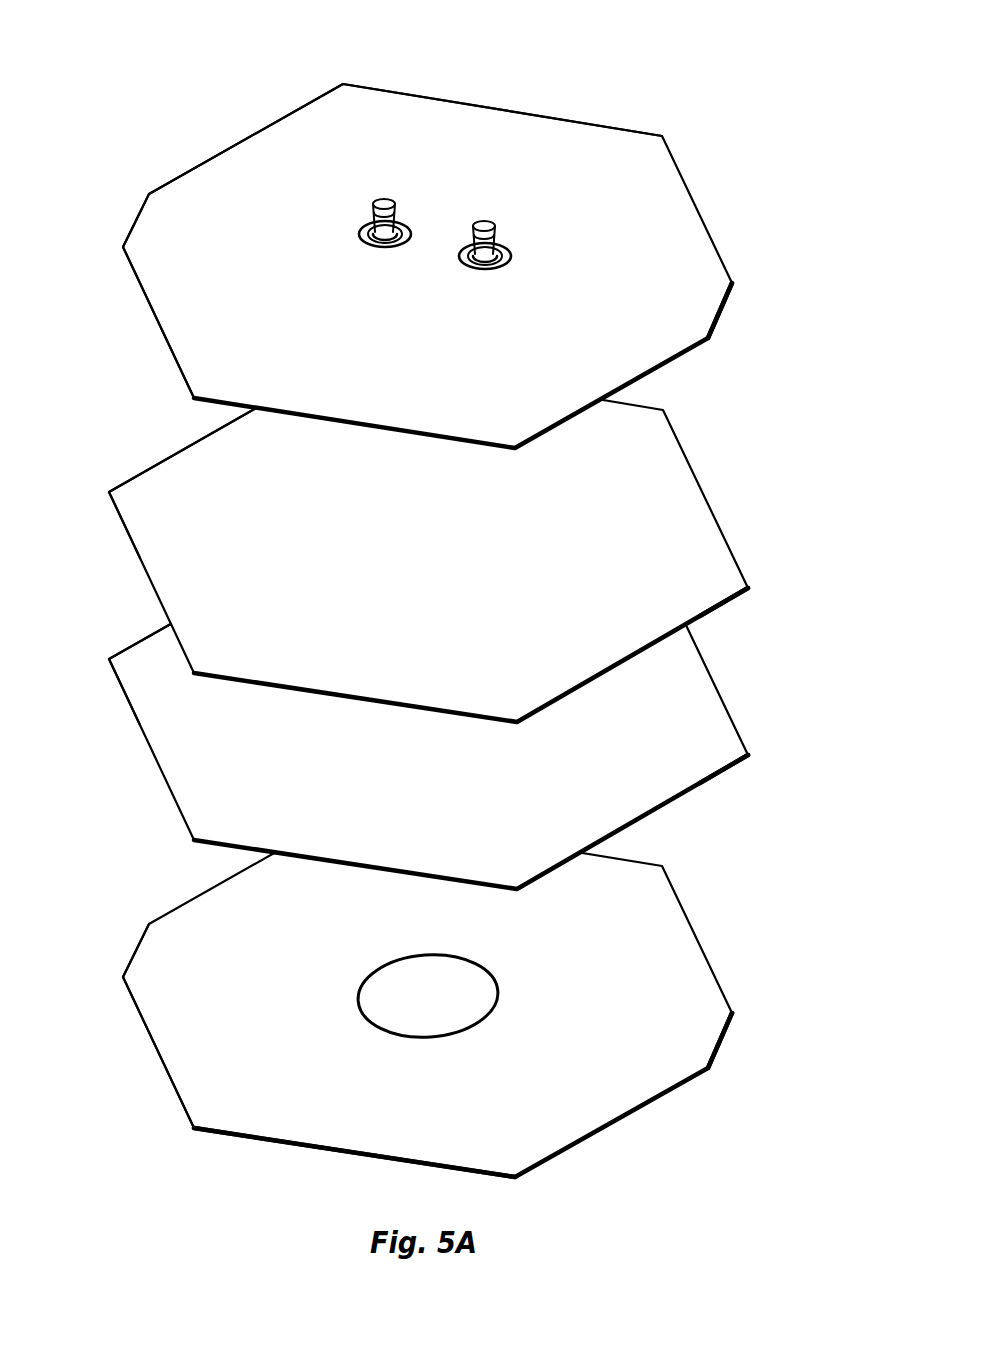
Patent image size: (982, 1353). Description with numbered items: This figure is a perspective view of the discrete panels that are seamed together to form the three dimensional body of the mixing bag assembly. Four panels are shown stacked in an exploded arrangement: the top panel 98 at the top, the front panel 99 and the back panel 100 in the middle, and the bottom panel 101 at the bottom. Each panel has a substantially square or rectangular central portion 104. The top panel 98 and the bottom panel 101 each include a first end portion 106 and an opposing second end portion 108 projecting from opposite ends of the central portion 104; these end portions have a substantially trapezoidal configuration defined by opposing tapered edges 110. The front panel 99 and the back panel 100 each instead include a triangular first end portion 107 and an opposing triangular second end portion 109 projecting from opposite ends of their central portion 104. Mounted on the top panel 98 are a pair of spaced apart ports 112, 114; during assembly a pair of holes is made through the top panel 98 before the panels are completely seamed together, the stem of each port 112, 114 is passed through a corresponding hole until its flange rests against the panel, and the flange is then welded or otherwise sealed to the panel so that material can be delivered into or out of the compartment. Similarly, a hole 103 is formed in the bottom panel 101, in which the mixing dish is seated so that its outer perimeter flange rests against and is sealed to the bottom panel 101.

The top panel 98 is at (645, 207).
The front panel 99 is at (682, 555).
The back panel 100 is at (665, 703).
The bottom panel 101 is at (672, 958).
The hole 103 is at (390, 1010).
The central portion 104 is at (470, 135).
The first end portion 106 is at (172, 238).
The first end portion 107 is at (136, 513).
The second end portion 108 is at (673, 285).
The second end portion 109 is at (685, 600).
The tapered edges 110 is at (218, 155).
The port 112 is at (370, 222).
The port 114 is at (495, 237).